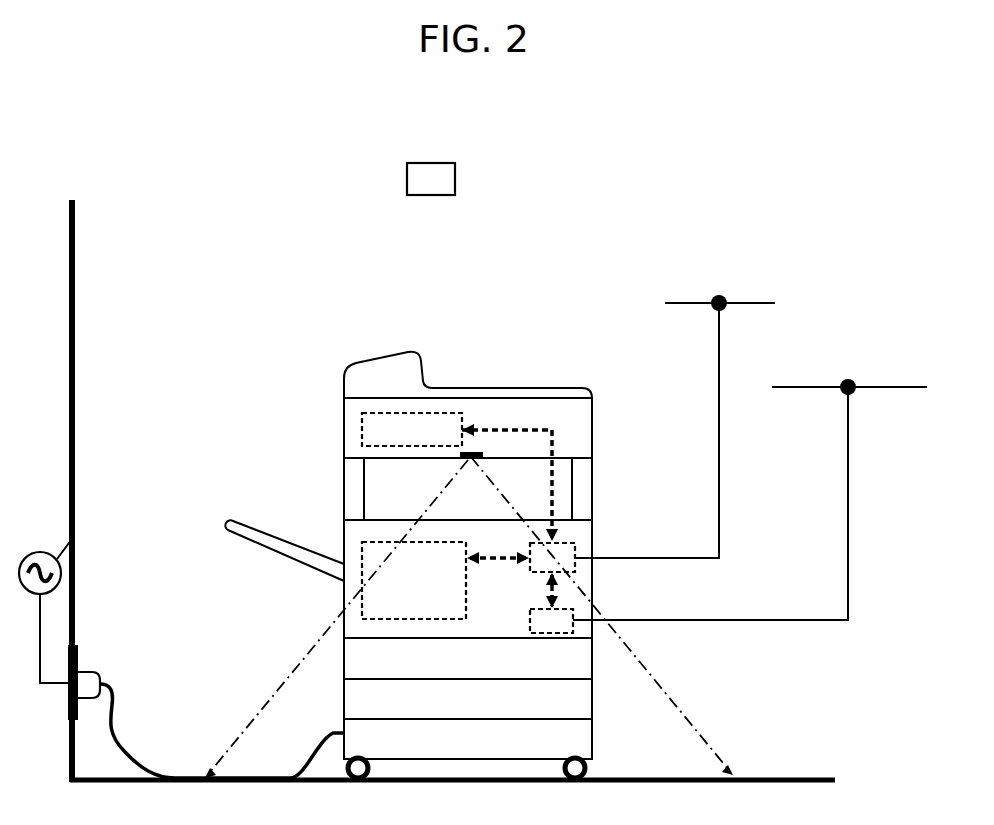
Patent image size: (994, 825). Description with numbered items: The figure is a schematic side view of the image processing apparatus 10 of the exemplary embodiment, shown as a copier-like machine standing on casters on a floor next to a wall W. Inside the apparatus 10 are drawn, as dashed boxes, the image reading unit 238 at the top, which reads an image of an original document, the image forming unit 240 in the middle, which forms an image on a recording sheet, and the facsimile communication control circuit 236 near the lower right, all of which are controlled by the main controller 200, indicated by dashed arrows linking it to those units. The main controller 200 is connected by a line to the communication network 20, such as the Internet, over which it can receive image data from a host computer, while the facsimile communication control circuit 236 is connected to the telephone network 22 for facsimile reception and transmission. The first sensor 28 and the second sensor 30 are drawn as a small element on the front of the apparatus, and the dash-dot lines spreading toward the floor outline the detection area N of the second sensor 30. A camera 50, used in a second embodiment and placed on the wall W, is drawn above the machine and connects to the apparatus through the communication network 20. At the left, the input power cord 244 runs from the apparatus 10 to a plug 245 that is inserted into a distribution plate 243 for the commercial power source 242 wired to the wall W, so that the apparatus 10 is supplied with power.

The image processing apparatus 10 is at (352, 336).
The communication network 20 is at (696, 302).
The telephone network 22 is at (886, 387).
The first sensor 28 is at (428, 475).
The second sensor 30 is at (469, 460).
The camera 50 is at (455, 178).
The main controller 200 is at (575, 546).
The facsimile communication control circuit 236 is at (573, 613).
The image reading unit 238 is at (362, 436).
The image forming unit 240 is at (362, 615).
The commercial power source 242 is at (73, 538).
The distribution plate 243 is at (95, 651).
The input power cord 244 is at (143, 763).
The plug 245 is at (94, 683).
The detection area N is at (670, 697).
The wall W is at (75, 355).